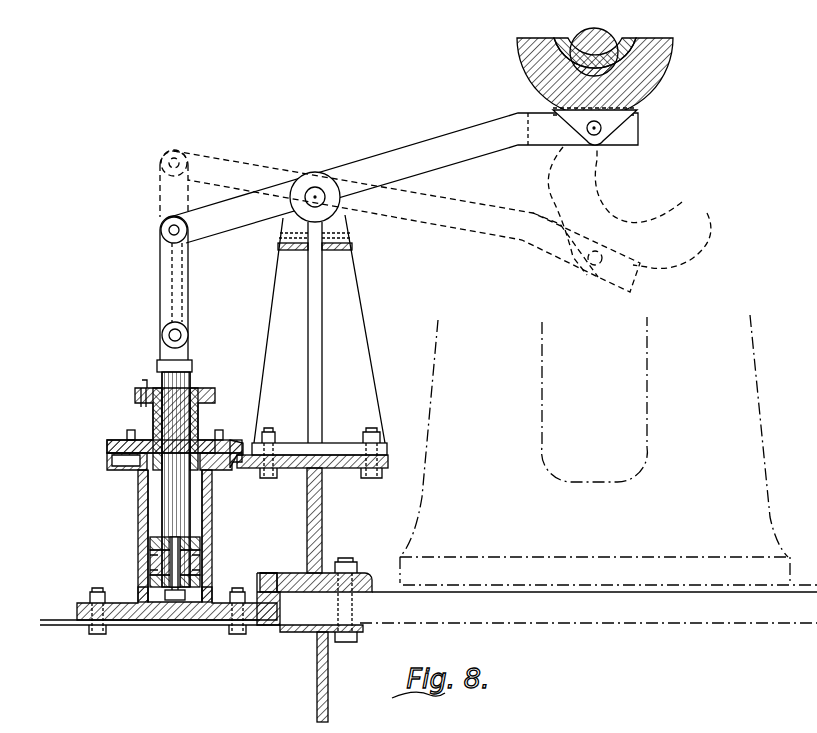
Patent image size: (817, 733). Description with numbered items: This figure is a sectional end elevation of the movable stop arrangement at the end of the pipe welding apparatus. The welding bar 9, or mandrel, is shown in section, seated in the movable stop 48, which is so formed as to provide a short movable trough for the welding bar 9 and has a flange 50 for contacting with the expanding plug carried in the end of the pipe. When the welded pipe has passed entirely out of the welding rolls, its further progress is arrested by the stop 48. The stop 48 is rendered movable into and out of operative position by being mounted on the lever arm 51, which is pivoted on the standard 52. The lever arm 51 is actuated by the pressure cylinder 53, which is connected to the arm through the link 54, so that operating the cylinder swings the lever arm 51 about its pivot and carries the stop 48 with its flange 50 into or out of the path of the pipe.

The welding bar 9 is at (562, 48).
The movable stop 48 is at (640, 70).
The flange 50 is at (668, 92).
The lever arm 51 is at (375, 153).
The standard 52 is at (356, 268).
The pressure cylinder 53 is at (138, 507).
The link 54 is at (193, 282).